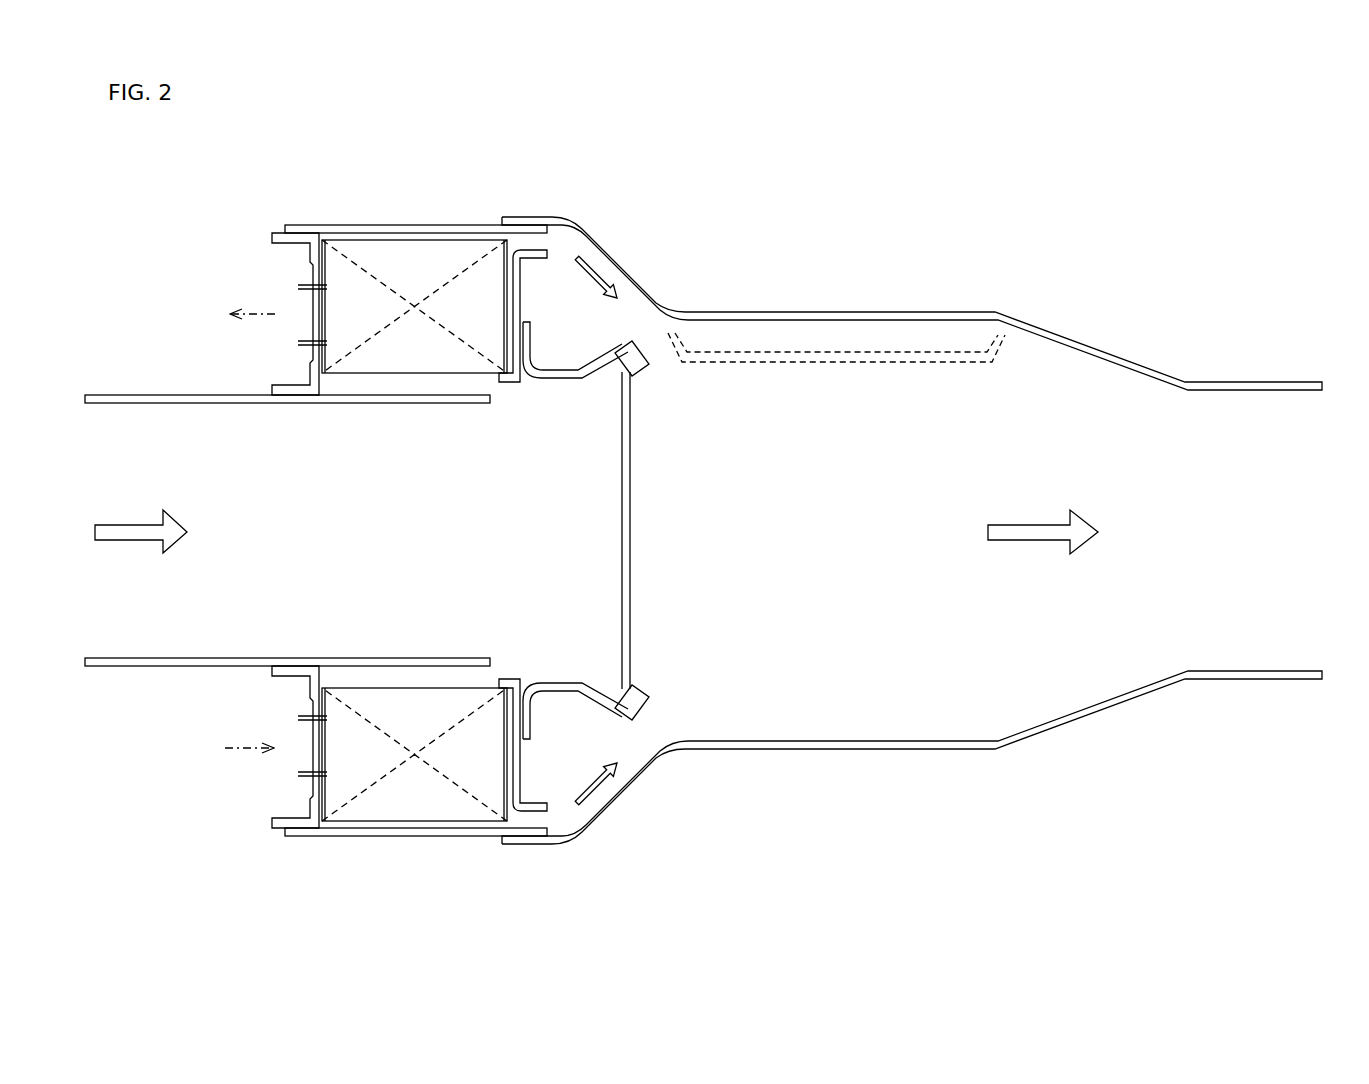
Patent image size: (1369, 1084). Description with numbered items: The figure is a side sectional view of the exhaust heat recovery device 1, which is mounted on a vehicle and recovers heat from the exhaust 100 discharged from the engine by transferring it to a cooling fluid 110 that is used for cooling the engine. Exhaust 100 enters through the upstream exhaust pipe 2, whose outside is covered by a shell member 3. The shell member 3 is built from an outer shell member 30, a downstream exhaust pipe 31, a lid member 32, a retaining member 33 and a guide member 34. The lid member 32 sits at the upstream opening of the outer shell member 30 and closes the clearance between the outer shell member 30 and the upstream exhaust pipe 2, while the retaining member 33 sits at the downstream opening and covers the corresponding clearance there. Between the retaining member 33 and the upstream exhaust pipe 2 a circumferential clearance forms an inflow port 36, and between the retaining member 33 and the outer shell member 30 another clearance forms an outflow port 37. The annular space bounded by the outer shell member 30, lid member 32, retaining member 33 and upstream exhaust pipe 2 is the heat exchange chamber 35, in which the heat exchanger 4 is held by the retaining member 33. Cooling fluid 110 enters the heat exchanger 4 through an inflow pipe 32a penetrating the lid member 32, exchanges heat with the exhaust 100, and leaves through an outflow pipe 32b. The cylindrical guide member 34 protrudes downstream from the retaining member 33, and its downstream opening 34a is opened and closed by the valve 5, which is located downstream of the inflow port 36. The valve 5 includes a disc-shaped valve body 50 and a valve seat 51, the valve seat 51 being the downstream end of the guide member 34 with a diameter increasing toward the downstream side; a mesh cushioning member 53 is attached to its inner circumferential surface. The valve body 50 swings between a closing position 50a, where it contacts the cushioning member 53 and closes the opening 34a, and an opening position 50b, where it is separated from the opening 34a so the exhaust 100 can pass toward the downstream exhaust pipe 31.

The exhaust heat recovery device 1 is at (782, 190).
The upstream exhaust pipe 2 is at (125, 400).
The shell member 3 is at (283, 196).
The heat exchanger 4 is at (411, 277).
The valve 5 is at (712, 563).
The outer shell member 30 is at (333, 225).
The downstream exhaust pipe 31 is at (955, 316).
The lid member 32 is at (310, 263).
The inflow pipe 32a is at (298, 770).
The outflow pipe 32b is at (298, 290).
The retaining member 33 is at (514, 276).
The guide member 34 is at (577, 381).
The opening 34a is at (603, 514).
The heat exchange chamber 35 is at (343, 402).
The inflow port 36 is at (503, 394).
The outflow port 37 is at (558, 238).
The valve body 50 is at (813, 511).
The closing position 50a is at (625, 605).
The opening position 50b is at (830, 362).
The valve seat 51 is at (623, 347).
The cushioning member 53 is at (626, 360).
The exhaust 100 is at (596, 530).
The cooling fluid 110 is at (227, 533).